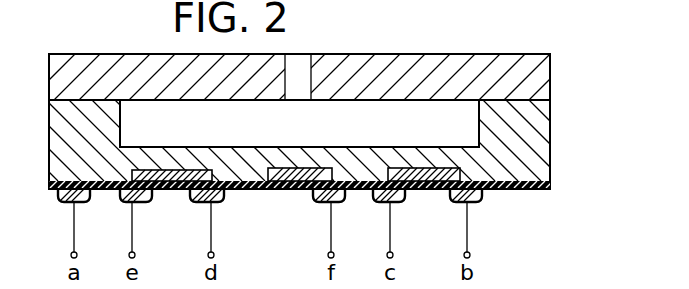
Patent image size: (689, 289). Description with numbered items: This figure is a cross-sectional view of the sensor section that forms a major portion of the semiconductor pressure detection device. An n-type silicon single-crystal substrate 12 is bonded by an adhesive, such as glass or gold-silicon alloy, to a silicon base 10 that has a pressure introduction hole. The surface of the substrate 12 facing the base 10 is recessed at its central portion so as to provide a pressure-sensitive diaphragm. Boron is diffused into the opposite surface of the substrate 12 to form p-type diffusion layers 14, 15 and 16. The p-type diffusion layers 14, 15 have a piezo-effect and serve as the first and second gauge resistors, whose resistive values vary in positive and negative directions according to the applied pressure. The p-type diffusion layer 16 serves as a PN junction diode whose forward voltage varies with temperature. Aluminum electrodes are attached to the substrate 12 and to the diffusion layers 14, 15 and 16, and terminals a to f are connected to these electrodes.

The silicon base 10 is at (453, 63).
The n-type silicon single-crystal substrate 12 is at (550, 141).
The p-type diffusion layer 14 is at (430, 184).
The p-type diffusion layer 15 is at (177, 183).
The p-type diffusion layer 16 is at (300, 185).